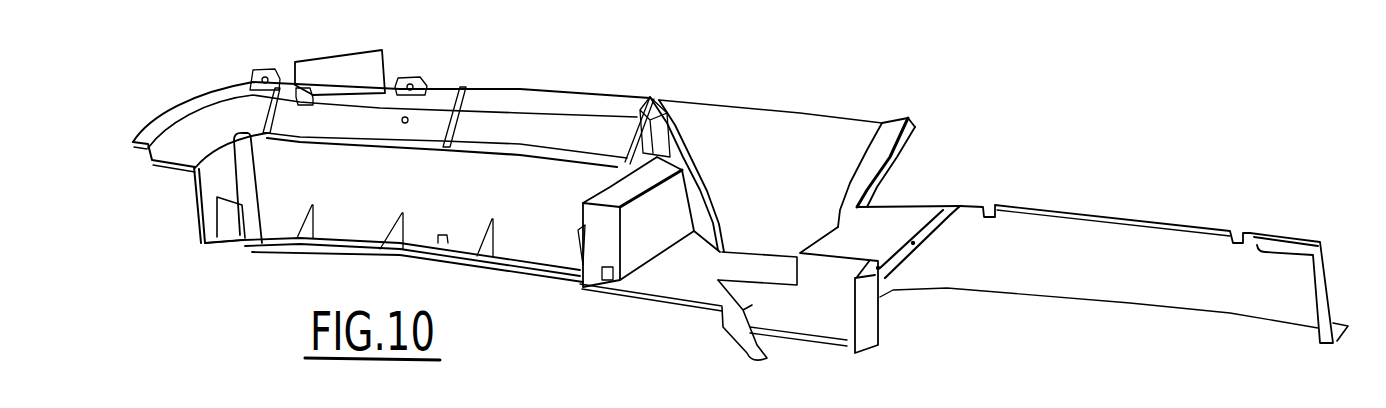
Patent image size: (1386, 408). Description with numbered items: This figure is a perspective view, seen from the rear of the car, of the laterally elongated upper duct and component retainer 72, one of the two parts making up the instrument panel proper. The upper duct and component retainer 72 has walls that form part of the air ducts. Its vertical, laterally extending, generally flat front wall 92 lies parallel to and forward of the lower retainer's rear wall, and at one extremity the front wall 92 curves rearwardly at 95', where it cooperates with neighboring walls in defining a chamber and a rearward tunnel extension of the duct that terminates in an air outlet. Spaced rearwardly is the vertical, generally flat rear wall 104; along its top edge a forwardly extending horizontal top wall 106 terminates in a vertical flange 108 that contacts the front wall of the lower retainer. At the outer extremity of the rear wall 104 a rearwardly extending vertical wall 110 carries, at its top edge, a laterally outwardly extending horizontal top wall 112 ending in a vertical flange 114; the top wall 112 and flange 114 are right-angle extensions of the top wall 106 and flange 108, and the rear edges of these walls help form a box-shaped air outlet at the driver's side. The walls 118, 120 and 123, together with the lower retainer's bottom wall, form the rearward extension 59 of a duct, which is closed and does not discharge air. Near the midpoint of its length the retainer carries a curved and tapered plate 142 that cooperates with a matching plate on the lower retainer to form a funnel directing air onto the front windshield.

The upper duct and component retainer 72 is at (1325, 228).
The front wall 92 is at (1185, 238).
The rearward curve of front wall 95' is at (1059, 279).
The rear wall 104 is at (450, 187).
The top wall 106 is at (537, 148).
The vertical flange 108 is at (493, 120).
The vertical wall 110 is at (215, 177).
The top wall 112 is at (200, 147).
The vertical flange 114 is at (169, 127).
The wall 118 is at (593, 253).
The wall 120 is at (610, 188).
The wall 123 is at (643, 247).
The curved and tapered plate 142 is at (813, 121).
The rearward extension 59 is at (592, 220).